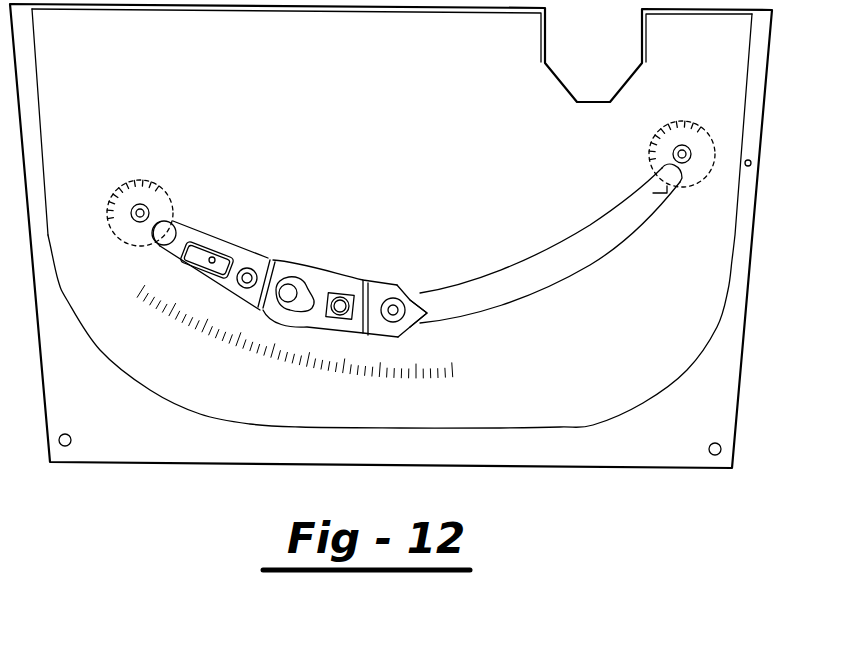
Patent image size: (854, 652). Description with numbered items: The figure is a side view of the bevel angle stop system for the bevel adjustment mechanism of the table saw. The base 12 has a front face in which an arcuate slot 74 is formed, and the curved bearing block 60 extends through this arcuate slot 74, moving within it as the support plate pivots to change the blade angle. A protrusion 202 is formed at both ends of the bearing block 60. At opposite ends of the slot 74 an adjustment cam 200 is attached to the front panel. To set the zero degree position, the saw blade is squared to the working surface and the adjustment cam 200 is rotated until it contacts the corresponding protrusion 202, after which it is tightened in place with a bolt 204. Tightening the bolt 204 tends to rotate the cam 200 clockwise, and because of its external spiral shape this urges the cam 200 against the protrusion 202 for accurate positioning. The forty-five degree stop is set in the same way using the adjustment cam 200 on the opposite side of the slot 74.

The base 12 is at (713, 395).
The bearing block 60 is at (323, 290).
The arcuate slot 74 is at (548, 270).
The adjustment cam 200 is at (172, 222).
The protrusion 202 is at (176, 243).
The bolt 204 is at (143, 208).